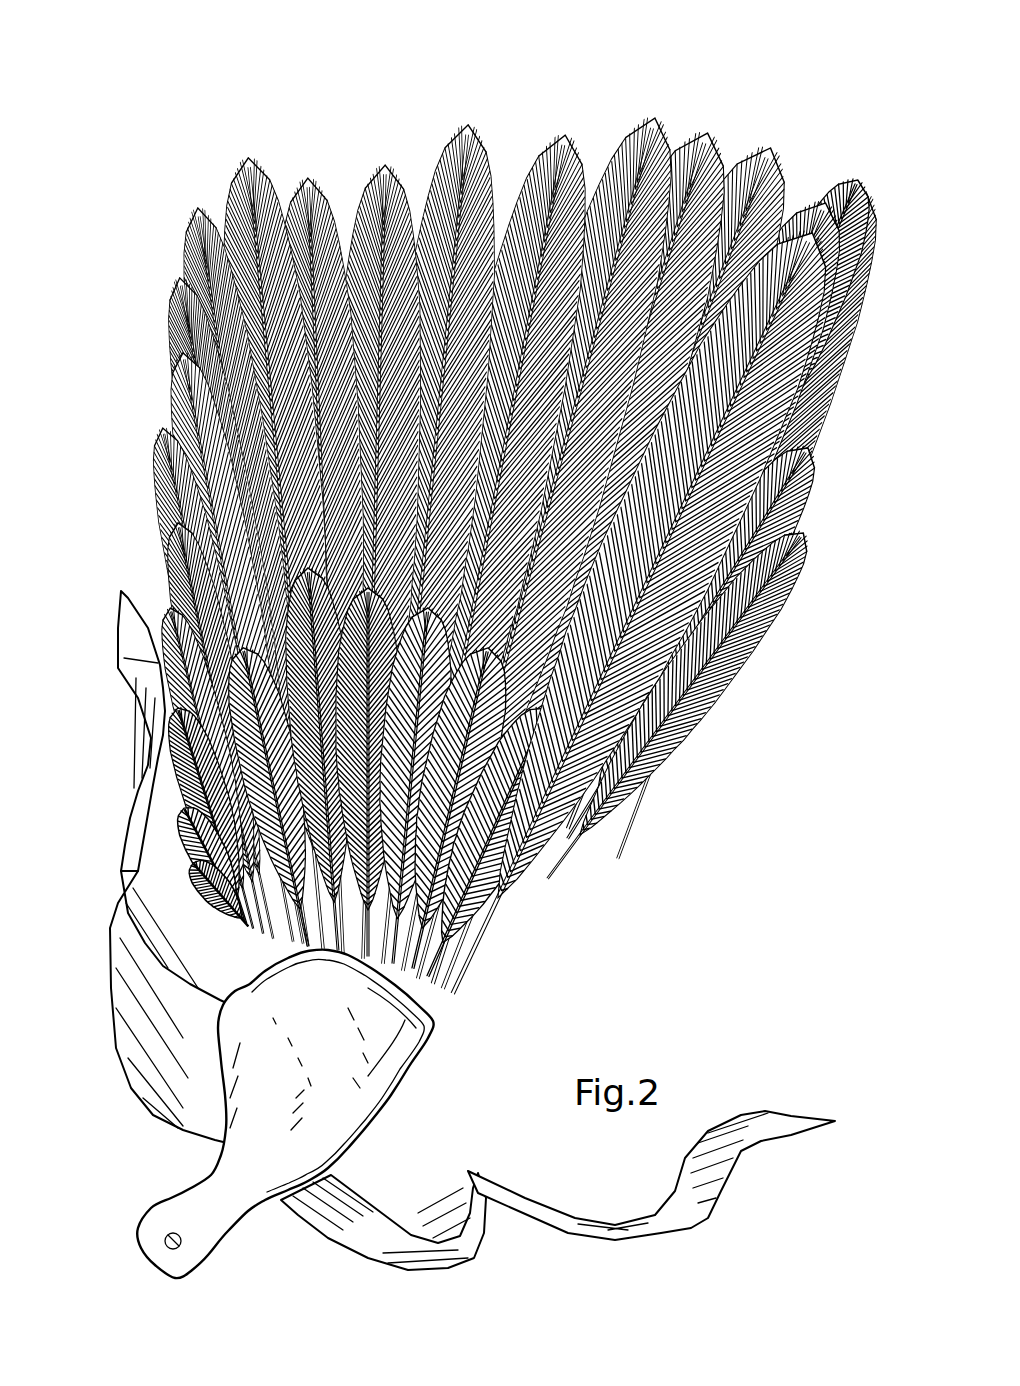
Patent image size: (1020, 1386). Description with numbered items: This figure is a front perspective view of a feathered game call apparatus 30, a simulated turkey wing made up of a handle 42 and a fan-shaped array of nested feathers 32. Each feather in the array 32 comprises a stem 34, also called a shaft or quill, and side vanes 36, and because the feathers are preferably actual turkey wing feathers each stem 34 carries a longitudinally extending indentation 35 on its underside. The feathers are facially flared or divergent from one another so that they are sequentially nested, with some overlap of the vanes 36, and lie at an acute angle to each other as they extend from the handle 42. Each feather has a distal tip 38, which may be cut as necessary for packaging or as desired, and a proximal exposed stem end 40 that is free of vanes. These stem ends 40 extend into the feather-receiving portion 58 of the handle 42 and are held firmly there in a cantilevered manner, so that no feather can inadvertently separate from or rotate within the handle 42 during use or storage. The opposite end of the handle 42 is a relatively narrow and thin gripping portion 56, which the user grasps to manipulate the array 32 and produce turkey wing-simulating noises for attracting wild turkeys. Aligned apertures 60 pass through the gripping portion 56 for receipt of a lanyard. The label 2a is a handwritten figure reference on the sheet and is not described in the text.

The feathered game call apparatus 30 is at (489, 662).
The fan-shaped array of nested feathers 32 is at (502, 527).
The stem 34 is at (340, 260).
The indentation 35 is at (240, 897).
The vanes 36 is at (350, 510).
The distal tip 38 is at (335, 185).
The exposed stem end 40 is at (268, 935).
The handle 42 is at (325, 1132).
The gripping portion 56 is at (185, 1185).
The feather-receiving portion 58 is at (390, 1020).
The apertures 60 is at (174, 1242).
The view reference 2a is at (154, 418).